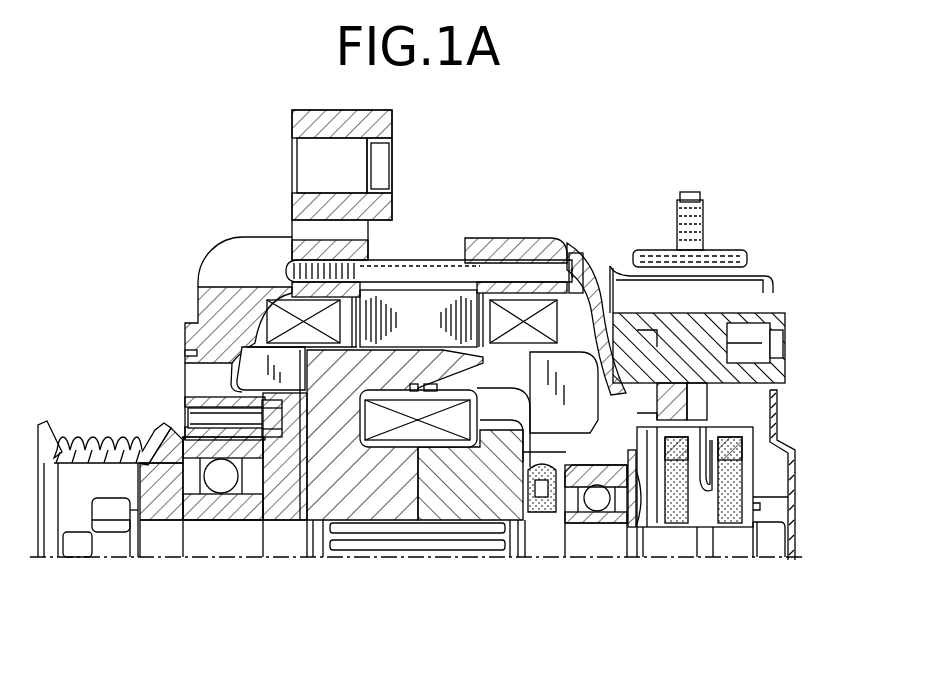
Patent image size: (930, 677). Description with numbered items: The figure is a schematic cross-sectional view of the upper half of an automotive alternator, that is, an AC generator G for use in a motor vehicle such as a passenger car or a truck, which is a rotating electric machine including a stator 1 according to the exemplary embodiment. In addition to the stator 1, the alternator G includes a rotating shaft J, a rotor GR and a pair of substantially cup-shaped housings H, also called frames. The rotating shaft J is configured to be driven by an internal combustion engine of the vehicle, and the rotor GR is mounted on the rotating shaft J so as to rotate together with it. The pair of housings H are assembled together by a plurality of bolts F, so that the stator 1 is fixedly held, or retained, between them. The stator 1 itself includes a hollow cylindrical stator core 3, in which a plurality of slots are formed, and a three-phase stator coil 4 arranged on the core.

The AC generator G is at (275, 183).
The bolts F is at (400, 282).
The housings H is at (543, 247).
The stator 1 is at (350, 227).
The stator core 3 is at (399, 300).
The stator coil 4 is at (280, 318).
The rotating shaft J is at (224, 545).
The rotor GR is at (372, 477).